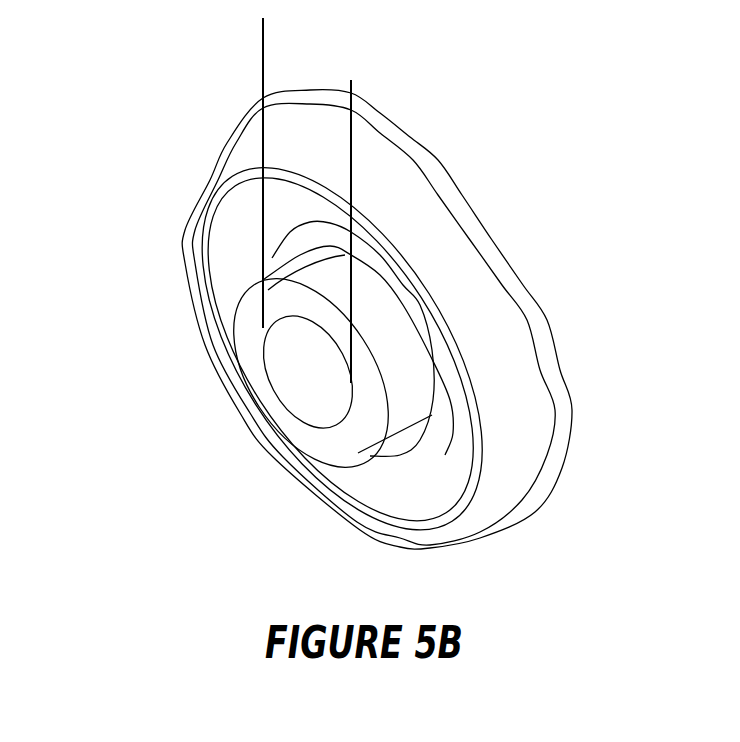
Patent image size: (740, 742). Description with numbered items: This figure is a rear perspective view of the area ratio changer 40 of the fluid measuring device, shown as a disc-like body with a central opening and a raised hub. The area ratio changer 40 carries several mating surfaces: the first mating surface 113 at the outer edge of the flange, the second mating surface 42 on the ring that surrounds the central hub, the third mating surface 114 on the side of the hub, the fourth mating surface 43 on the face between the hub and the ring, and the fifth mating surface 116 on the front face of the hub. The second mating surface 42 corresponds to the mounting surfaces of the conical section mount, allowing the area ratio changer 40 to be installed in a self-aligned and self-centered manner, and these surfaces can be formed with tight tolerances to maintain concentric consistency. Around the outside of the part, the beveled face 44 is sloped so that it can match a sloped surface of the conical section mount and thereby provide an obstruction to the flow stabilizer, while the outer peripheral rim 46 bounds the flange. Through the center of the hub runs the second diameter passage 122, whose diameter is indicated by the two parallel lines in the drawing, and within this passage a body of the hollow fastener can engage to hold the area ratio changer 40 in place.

The area ratio changer 40 is at (130, 489).
The second mating surface 42 is at (212, 283).
The fourth mating surface 43 is at (402, 363).
The beveled face 44 is at (247, 147).
The outer peripheral rim 46 is at (554, 477).
The first mating surface 113 is at (288, 477).
The third mating surface 114 is at (425, 436).
The fifth mating surface 116 is at (243, 338).
The second diameter passage 122 is at (341, 77).